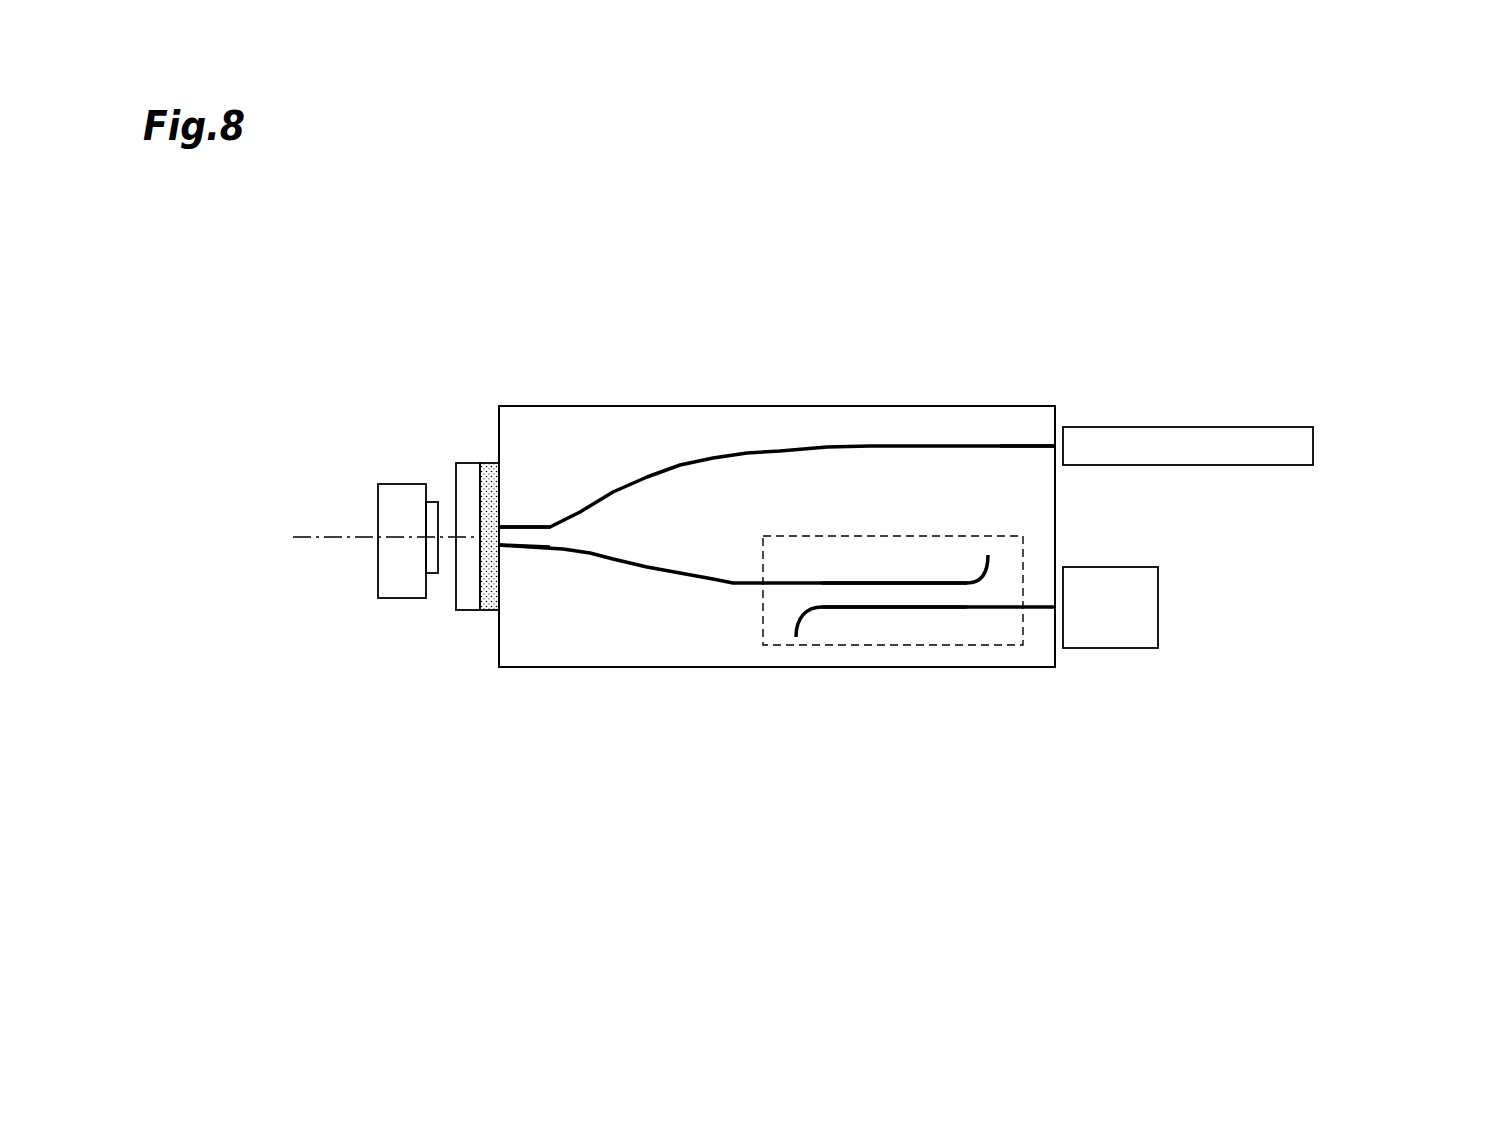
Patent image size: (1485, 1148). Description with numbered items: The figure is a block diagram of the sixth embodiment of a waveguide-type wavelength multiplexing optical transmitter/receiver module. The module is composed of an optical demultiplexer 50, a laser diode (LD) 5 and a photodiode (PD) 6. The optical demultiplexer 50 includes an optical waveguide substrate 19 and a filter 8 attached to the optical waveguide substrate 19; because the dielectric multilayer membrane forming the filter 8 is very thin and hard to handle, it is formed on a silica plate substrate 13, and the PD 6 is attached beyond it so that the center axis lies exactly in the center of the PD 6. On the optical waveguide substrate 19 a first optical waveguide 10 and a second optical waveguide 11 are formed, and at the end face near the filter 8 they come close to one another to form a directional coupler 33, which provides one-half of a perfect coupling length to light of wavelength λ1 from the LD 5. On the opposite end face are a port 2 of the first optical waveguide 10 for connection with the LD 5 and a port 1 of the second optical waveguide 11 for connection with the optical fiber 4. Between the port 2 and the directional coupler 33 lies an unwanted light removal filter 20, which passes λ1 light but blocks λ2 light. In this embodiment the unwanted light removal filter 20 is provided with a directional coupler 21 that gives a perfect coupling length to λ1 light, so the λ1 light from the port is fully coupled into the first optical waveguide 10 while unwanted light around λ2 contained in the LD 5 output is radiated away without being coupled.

The port 1 is at (1059, 387).
The port 2 is at (992, 658).
The optical fiber 4 is at (1261, 386).
The laser diode (LD) 5 is at (1266, 607).
The photodiode (PD) 6 is at (419, 627).
The filter 8 is at (537, 424).
The first optical waveguide 10 is at (807, 672).
The second optical waveguide 11 is at (896, 398).
The substrate 13 is at (386, 459).
The optical waveguide substrate 19 is at (777, 661).
The unwanted light removal filter 20 is at (1082, 572).
The directional coupler 21 is at (1034, 668).
The directional coupler 33 is at (685, 420).
The optical demultiplexer 50 is at (777, 633).